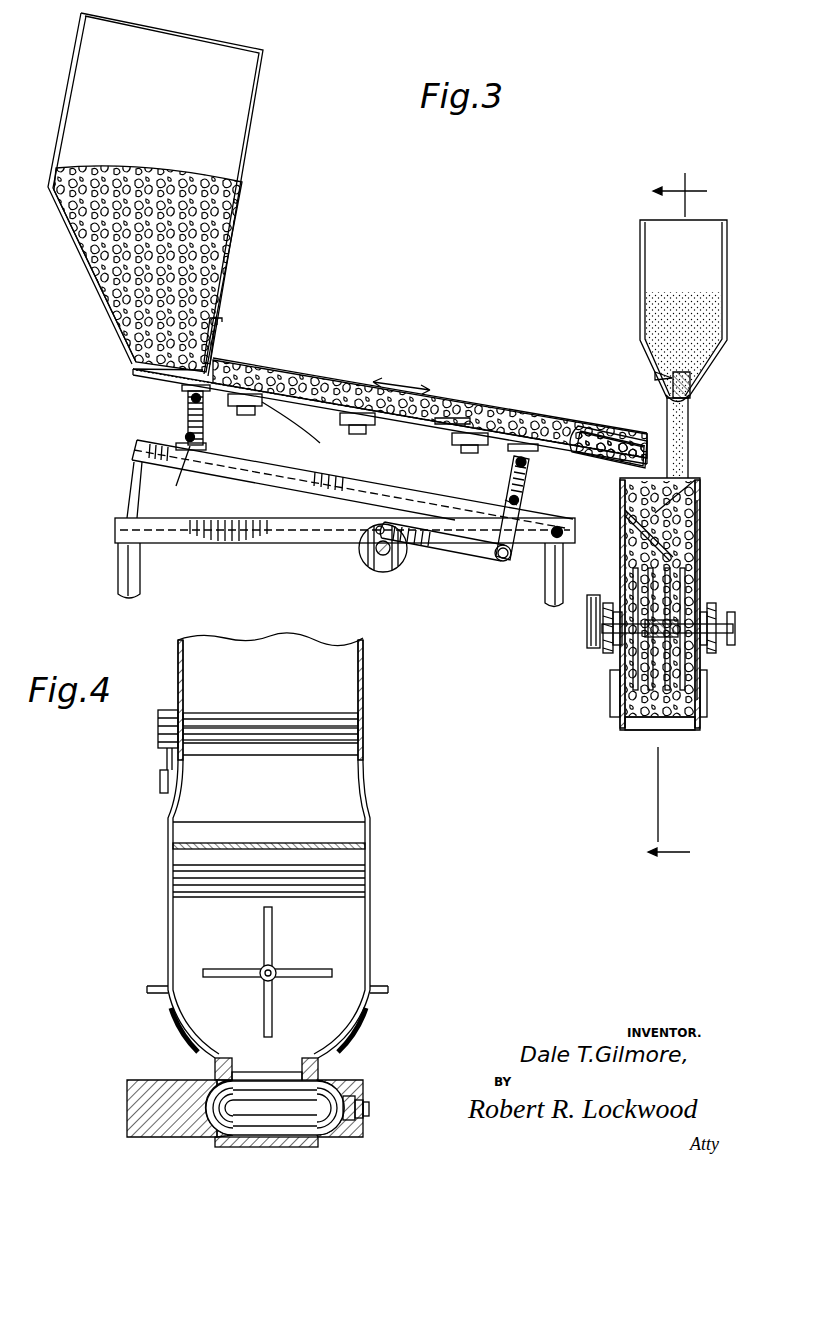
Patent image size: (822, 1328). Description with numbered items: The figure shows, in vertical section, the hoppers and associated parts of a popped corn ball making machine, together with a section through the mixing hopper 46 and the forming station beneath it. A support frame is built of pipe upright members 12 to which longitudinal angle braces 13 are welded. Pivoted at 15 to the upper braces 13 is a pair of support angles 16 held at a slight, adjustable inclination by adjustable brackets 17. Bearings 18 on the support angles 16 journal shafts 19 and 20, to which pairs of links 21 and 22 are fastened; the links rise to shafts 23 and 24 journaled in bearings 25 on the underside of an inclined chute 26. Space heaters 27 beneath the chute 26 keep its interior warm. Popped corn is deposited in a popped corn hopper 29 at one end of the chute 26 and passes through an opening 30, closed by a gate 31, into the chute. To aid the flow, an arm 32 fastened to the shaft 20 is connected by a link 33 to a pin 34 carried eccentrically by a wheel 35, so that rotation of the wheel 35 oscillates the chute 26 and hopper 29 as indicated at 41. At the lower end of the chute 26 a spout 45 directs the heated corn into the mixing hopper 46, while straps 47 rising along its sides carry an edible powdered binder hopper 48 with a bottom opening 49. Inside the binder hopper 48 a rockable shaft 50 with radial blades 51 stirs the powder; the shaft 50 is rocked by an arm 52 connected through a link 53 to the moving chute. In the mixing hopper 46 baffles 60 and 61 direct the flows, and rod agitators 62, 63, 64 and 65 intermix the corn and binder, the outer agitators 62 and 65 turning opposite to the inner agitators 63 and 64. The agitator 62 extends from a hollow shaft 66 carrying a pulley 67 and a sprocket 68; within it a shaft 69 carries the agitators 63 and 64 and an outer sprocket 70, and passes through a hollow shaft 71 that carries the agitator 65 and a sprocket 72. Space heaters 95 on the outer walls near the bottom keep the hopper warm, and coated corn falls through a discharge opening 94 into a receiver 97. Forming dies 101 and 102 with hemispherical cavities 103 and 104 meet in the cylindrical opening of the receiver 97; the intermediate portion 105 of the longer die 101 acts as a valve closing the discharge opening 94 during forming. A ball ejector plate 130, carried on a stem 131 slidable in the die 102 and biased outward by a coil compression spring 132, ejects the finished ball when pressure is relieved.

In FIG. 3, the upright members 12 is at (120, 573).
In FIG. 3, the longitudinal angle braces 13 is at (228, 520).
In FIG. 3, the pivot 15 is at (560, 527).
In FIG. 3, the support angles 16 is at (365, 480).
In FIG. 3, the adjustable brackets 17 is at (130, 488).
In FIG. 3, the bearings 18 is at (507, 500).
In FIG. 3, the shaft 19 is at (185, 436).
In FIG. 3, the shaft 20 is at (520, 500).
In FIG. 3, the links 21 is at (203, 424).
In FIG. 3, the links 22 is at (530, 470).
In FIG. 3, the shaft 23 is at (190, 398).
In FIG. 3, the shaft 24 is at (514, 463).
In FIG. 3, the bearings 25 is at (160, 380).
In FIG. 3, the chute 26 is at (450, 417).
In FIG. 3, the space heaters 27 is at (247, 416).
In FIG. 3, the popped corn hopper 29 is at (242, 182).
In FIG. 3, the opening 30 is at (215, 362).
In FIG. 3, the gate 31 is at (223, 320).
In FIG. 3, the arm 32 is at (503, 561).
In FIG. 3, the link 33 is at (448, 550).
In FIG. 3, the pin 34 is at (372, 536).
In FIG. 3, the wheel 35 is at (376, 568).
In FIG. 3, the oscillation 41 is at (404, 378).
In FIG. 3, the spout 45 is at (612, 426).
In FIG. 3, the mixing hopper 46 is at (700, 555).
In FIG. 4, the mixing hopper 46 is at (372, 861).
In FIG. 3, the straps 47 is at (690, 428).
In FIG. 4, the straps 47 is at (166, 812).
In FIG. 3, the edible powdered binder hopper 48 is at (720, 290).
In FIG. 4, the edible powdered binder hopper 48 is at (352, 666).
In FIG. 3, the opening 49 is at (692, 400).
In FIG. 3, the shaft 50 is at (692, 380).
In FIG. 4, the shaft 50 is at (280, 727).
In FIG. 3, the blades 51 is at (655, 376).
In FIG. 4, the blades 51 is at (240, 722).
In FIG. 4, the arm 52 is at (162, 756).
In FIG. 4, the link 53 is at (160, 786).
In FIG. 3, the baffle 60 is at (700, 482).
In FIG. 4, the baffle 60 is at (292, 842).
In FIG. 3, the baffle 61 is at (640, 526).
In FIG. 4, the baffle 61 is at (221, 866).
In FIG. 3, the agitator 62 is at (645, 575).
In FIG. 3, the agitator 63 is at (632, 565).
In FIG. 4, the agitator 63 is at (263, 934).
In FIG. 3, the agitator 64 is at (670, 580).
In FIG. 3, the agitator 65 is at (688, 590).
In FIG. 3, the hollow shaft 66 is at (614, 642).
In FIG. 3, the pulley 67 is at (588, 628).
In FIG. 3, the sprocket 68 is at (604, 648).
In FIG. 3, the shaft 69 is at (724, 636).
In FIG. 4, the shaft 69 is at (273, 971).
In FIG. 3, the sprocket 70 is at (716, 642).
In FIG. 3, the hollow shaft 71 is at (705, 672).
In FIG. 3, the sprocket 72 is at (734, 628).
In FIG. 3, the discharge opening 94 is at (638, 728).
In FIG. 4, the discharge opening 94 is at (290, 1072).
In FIG. 3, the space heaters 95 is at (611, 700).
In FIG. 4, the space heaters 95 is at (172, 1024).
In FIG. 4, the receiver 97 is at (320, 1146).
In FIG. 4, the forming die 101 is at (128, 1104).
In FIG. 4, the forming die 102 is at (350, 1085).
In FIG. 4, the hemispherical cavity 103 is at (234, 1100).
In FIG. 4, the hemispherical cavity 104 is at (306, 1126).
In FIG. 4, the intermediate portion 105 is at (150, 1079).
In FIG. 4, the ball ejector plate 130 is at (356, 1098).
In FIG. 4, the stem 131 is at (364, 1105).
In FIG. 4, the coil compression spring 132 is at (369, 1112).